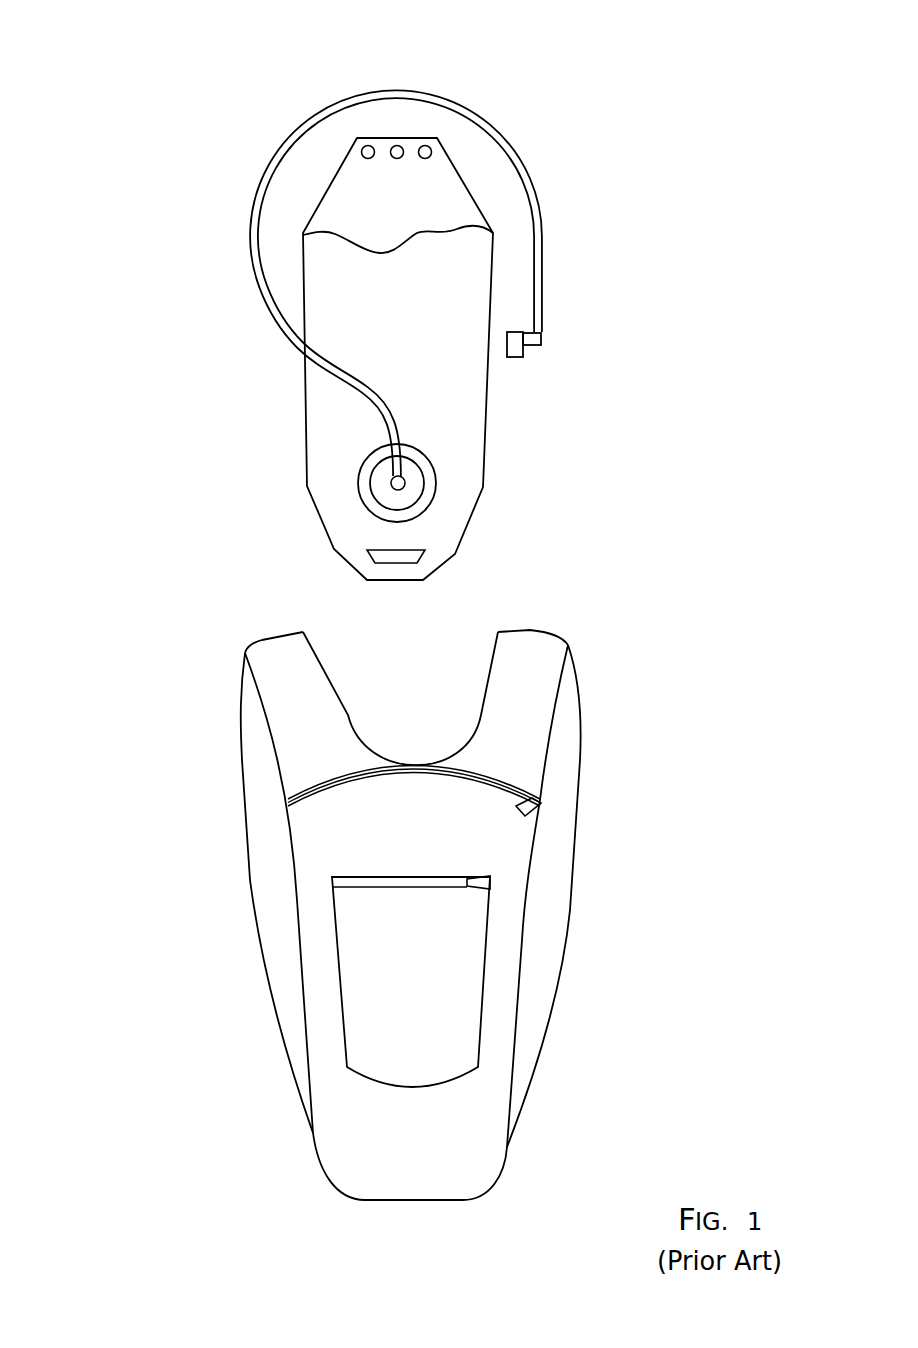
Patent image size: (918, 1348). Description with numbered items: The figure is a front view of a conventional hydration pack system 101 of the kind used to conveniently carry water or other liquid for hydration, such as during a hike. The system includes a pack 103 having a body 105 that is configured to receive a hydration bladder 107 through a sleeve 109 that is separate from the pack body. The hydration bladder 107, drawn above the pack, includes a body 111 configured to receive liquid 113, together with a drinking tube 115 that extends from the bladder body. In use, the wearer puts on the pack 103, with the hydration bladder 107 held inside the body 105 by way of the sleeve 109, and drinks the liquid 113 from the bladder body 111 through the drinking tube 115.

The hydration pack system 101 is at (134, 54).
The pack 103 is at (641, 641).
The body 105 is at (517, 1027).
The hydration bladder 107 is at (651, 66).
The sleeve 109 is at (355, 768).
The body 111 is at (306, 450).
The liquid 113 is at (437, 233).
The drinking tube 115 is at (256, 192).